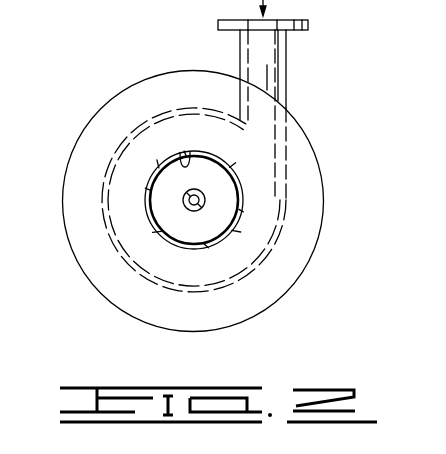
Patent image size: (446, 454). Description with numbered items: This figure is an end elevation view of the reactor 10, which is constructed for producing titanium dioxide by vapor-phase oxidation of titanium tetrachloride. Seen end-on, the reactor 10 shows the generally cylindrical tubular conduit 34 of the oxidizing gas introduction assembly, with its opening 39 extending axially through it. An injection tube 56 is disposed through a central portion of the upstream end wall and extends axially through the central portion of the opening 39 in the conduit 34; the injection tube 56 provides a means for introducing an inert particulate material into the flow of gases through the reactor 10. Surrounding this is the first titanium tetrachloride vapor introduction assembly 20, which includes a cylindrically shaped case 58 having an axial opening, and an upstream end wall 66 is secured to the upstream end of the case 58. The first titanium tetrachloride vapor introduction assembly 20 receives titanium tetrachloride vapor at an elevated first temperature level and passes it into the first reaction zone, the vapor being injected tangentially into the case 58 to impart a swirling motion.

The reactor 10 is at (105, 70).
The first titanium tetrachloride vapor introduction assembly 20 is at (313, 57).
The tubular conduit 34 is at (238, 212).
The opening 39 is at (184, 153).
The injection tube 56 is at (205, 198).
The case 58 is at (245, 272).
The upstream end wall 66 is at (100, 134).